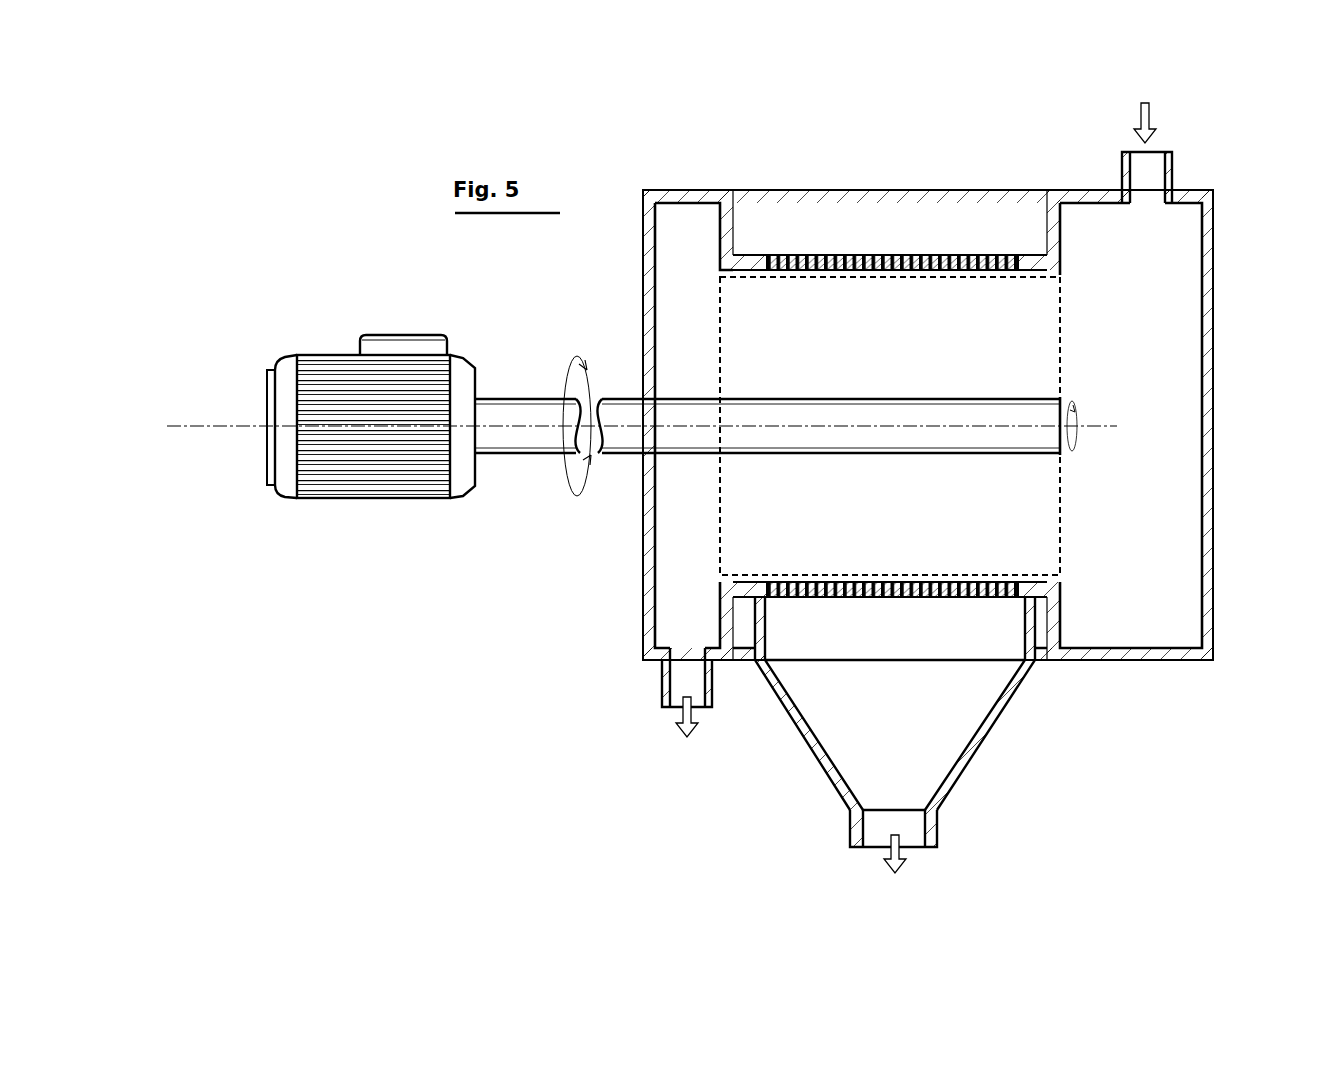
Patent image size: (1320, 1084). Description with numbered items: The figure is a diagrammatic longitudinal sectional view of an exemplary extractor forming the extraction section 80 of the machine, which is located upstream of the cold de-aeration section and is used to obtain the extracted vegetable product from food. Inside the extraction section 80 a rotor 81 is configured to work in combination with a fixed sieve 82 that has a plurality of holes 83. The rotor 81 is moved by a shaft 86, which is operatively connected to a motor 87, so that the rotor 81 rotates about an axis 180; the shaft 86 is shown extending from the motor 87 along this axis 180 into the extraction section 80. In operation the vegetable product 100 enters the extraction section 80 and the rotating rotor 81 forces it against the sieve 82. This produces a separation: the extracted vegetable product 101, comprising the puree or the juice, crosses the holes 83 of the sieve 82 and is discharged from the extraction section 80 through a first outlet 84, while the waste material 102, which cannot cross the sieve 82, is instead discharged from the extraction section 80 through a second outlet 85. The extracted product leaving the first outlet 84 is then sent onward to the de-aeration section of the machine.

The extraction section 80 is at (1190, 722).
The rotor 81 is at (1068, 350).
The fixed sieve 82 is at (955, 252).
The holes 83 is at (935, 255).
The first outlet 84 is at (930, 830).
The second outlet 85 is at (663, 705).
The shaft 86 is at (537, 397).
The motor 87 is at (385, 513).
The vegetable product 100 is at (1150, 120).
The extracted vegetable product 101 is at (890, 862).
The waste material 102 is at (690, 725).
The axis 180 is at (179, 427).